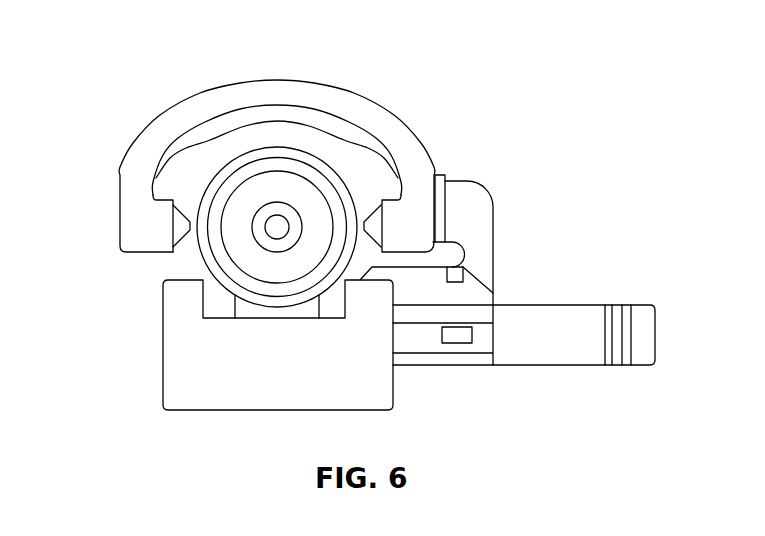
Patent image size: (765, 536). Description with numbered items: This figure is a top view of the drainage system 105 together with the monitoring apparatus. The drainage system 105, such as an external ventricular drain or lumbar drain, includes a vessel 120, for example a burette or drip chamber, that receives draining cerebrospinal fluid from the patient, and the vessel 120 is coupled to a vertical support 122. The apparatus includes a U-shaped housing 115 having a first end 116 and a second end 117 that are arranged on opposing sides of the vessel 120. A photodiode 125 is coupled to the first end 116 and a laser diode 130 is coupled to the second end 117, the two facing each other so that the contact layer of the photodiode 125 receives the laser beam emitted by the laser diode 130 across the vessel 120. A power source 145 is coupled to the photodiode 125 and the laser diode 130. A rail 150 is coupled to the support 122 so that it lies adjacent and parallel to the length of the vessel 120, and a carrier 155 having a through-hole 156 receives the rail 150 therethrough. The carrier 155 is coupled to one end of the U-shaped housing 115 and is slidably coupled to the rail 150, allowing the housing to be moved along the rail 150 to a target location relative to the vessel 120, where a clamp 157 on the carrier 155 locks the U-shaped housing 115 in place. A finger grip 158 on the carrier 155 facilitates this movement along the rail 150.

The drainage system 105 is at (535, 105).
The U-shaped housing 115 is at (140, 143).
The first end 116 is at (418, 228).
The second end 117 is at (140, 225).
The vessel 120 is at (247, 157).
The vertical support 122 is at (198, 385).
The photodiode 125 is at (372, 228).
The laser diode 130 is at (183, 230).
The power source 145 is at (277, 80).
The rail 150 is at (462, 337).
The carrier 155 is at (495, 250).
The through-hole 156 is at (450, 345).
The clamp 157 is at (478, 295).
The finger grip 158 is at (566, 368).